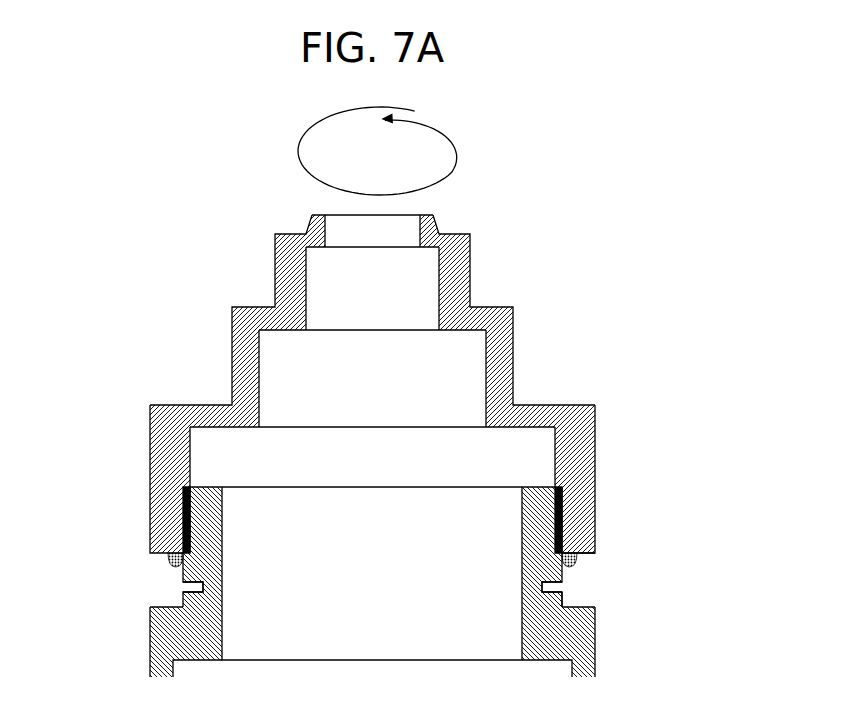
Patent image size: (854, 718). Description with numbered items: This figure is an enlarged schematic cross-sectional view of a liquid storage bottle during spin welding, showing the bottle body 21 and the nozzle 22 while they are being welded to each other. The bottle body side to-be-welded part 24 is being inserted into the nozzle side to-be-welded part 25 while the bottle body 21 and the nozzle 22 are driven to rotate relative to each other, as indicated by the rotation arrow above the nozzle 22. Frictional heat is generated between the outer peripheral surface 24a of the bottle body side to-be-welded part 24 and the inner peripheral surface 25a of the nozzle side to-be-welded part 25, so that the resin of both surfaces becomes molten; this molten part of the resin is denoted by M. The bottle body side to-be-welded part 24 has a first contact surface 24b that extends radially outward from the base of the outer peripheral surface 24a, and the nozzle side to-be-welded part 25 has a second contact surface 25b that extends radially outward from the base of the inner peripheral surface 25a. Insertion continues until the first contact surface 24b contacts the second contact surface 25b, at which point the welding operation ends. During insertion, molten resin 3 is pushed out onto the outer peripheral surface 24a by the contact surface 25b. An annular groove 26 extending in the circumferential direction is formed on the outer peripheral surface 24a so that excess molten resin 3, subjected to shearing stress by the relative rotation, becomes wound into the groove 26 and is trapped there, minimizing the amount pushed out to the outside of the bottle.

The nozzle 22 is at (580, 307).
The nozzle side to-be-welded part 25 is at (593, 445).
The inner peripheral surface 25a is at (553, 525).
The second contact surface 25b is at (580, 558).
The molten part M is at (187, 545).
The bottle body side to-be-welded part 24 is at (203, 503).
The outer peripheral surface 24a is at (173, 523).
The first contact surface 24b is at (578, 600).
The annular groove 26 is at (195, 583).
The bottle body 21 is at (647, 678).
The molten resin 3 is at (162, 567).